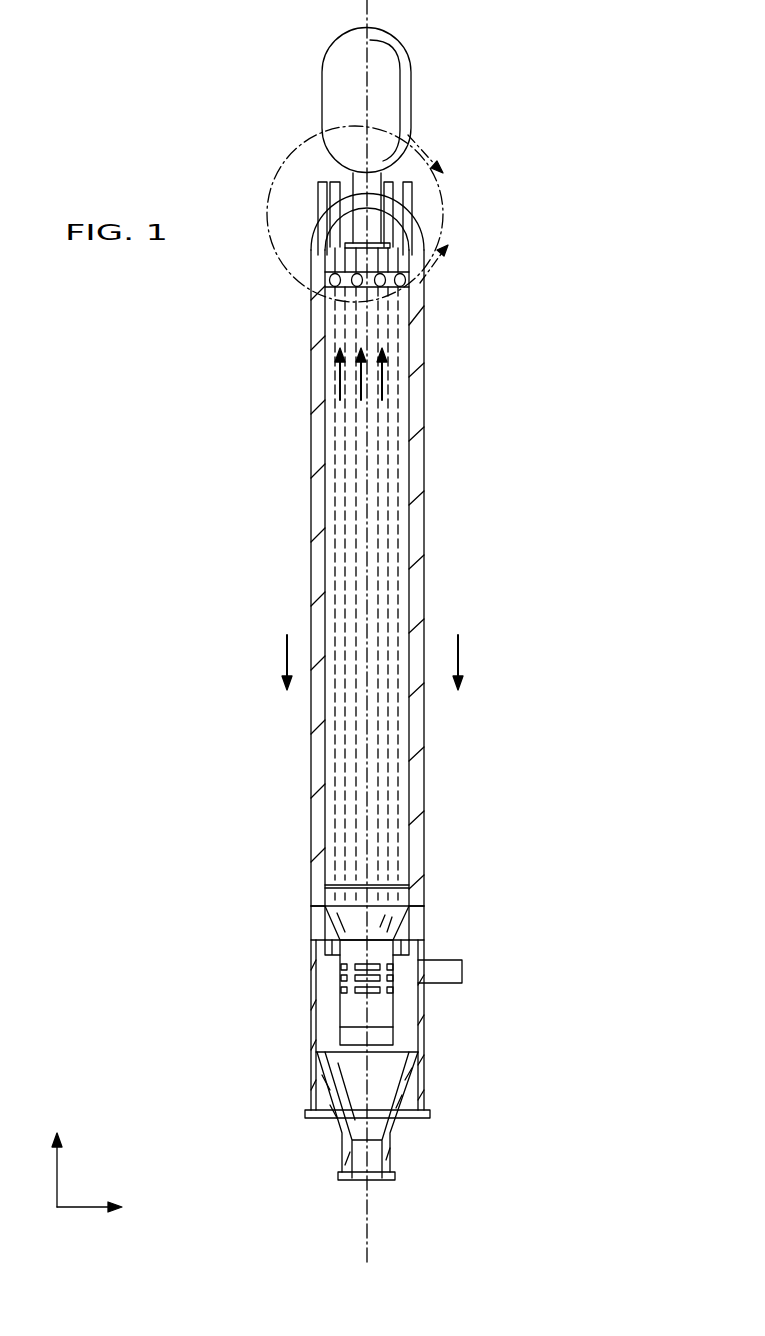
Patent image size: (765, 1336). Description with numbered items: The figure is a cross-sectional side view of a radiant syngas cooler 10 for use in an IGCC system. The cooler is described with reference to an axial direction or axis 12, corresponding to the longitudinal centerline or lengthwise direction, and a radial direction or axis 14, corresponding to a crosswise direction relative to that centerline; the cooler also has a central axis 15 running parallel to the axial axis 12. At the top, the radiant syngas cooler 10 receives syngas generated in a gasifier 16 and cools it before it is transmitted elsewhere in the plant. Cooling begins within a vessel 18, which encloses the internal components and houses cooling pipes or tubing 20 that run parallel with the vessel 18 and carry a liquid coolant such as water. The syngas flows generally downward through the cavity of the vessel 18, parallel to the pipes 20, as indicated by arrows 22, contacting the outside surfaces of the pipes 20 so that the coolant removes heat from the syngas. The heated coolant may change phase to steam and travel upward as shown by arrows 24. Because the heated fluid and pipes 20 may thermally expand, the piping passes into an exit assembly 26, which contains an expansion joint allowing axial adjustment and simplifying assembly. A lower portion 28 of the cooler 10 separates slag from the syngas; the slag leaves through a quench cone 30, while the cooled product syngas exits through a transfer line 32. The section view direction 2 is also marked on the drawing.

The section view 2-2 direction 2 is at (367, 214).
The radiant syngas cooler 10 is at (535, 457).
The axial direction or axis 12 is at (57, 1160).
The radial direction or axis 14 is at (88, 1207).
The central axis 15 is at (367, 15).
The gasifier 16 is at (400, 46).
The vessel 18 is at (414, 384).
The cooling pipes or tubing 20 is at (340, 520).
The arrows 22 is at (287, 657).
The arrows 24 is at (338, 383).
The exit assembly 26 is at (413, 212).
The lower portion 28 is at (310, 940).
The quench cone 30 is at (386, 1180).
The transfer line 32 is at (435, 957).